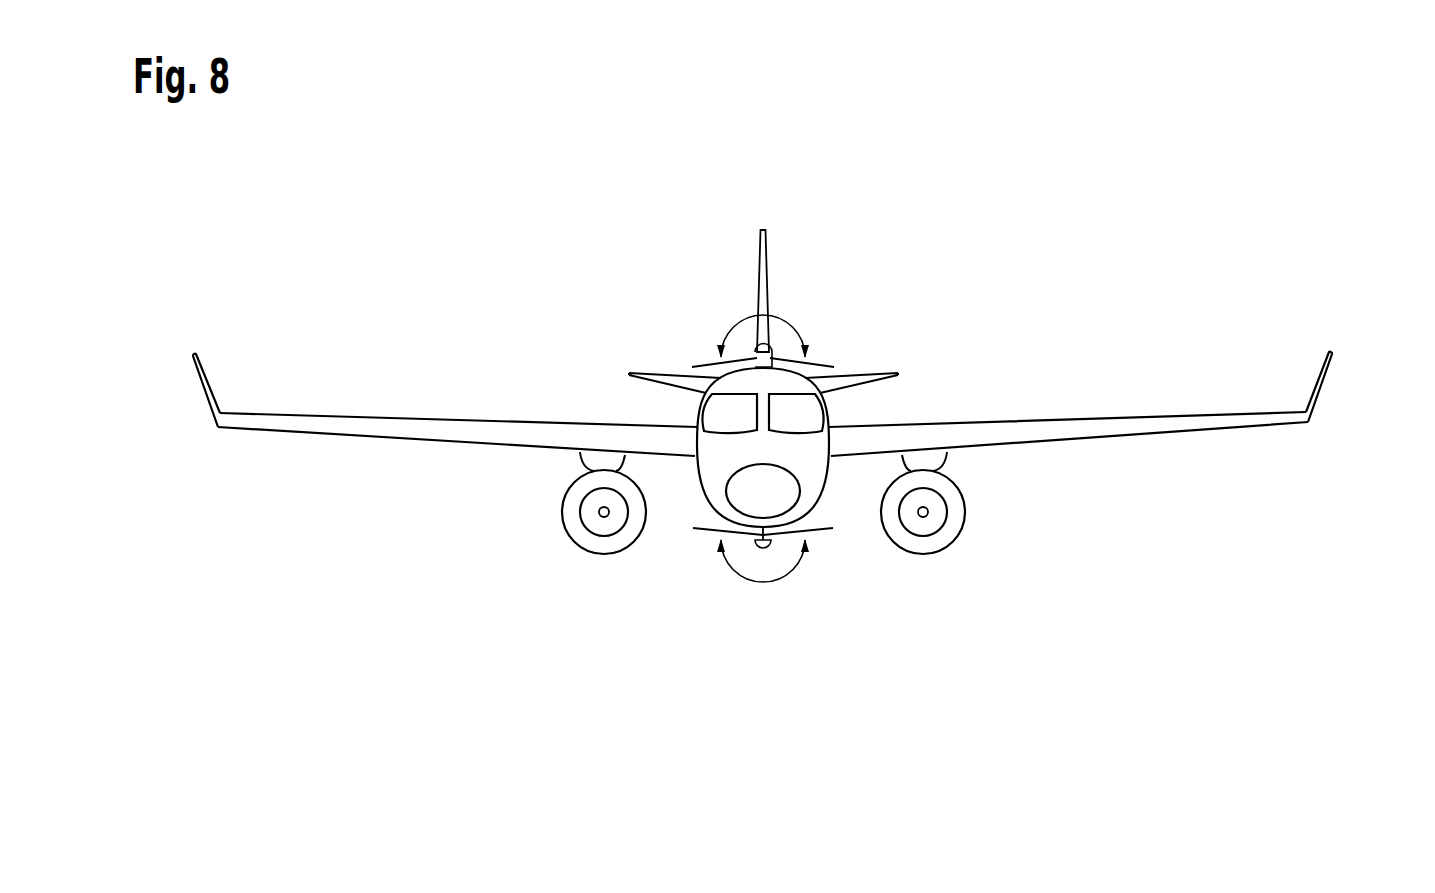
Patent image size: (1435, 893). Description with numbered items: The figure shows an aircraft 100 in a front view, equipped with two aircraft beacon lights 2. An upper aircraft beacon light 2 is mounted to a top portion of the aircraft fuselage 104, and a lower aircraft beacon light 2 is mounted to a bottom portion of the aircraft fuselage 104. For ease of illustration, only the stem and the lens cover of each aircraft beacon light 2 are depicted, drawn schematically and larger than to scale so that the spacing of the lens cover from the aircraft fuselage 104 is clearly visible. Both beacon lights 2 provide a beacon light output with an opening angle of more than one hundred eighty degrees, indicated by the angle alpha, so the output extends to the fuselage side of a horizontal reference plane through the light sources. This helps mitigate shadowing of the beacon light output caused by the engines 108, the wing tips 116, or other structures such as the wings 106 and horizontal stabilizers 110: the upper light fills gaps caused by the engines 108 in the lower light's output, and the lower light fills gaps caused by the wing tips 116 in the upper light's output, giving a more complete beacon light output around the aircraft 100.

The aircraft 100 is at (1331, 275).
The aircraft fuselage 104 is at (815, 480).
The wing 106 is at (407, 427).
The engines 108 is at (601, 548).
The horizontal stabilizer 110 is at (648, 375).
The wing tips 116 is at (210, 397).
The aircraft beacon light 2 is at (760, 353).